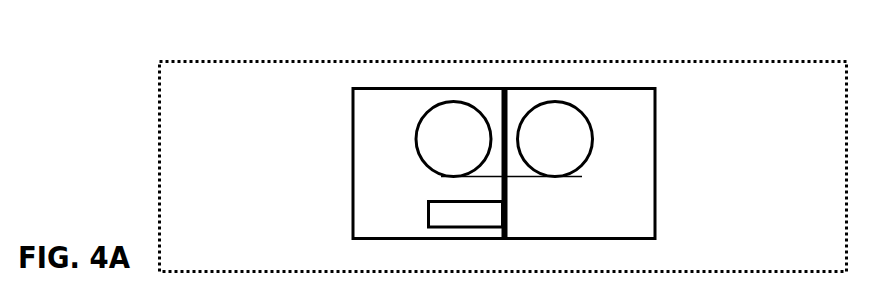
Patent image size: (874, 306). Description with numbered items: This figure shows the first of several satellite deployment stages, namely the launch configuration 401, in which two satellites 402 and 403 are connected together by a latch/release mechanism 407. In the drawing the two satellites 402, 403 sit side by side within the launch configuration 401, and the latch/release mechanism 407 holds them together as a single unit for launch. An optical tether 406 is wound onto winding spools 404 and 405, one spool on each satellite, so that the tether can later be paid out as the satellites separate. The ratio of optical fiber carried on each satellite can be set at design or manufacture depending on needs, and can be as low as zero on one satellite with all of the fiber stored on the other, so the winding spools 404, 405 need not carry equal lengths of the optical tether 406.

The launch configuration 401 is at (277, 63).
The satellite 402 is at (424, 86).
The satellite 403 is at (579, 86).
The winding spool 404 is at (407, 153).
The winding spool 405 is at (598, 159).
The optical tether 406 is at (526, 186).
The latch/release mechanism 407 is at (466, 229).